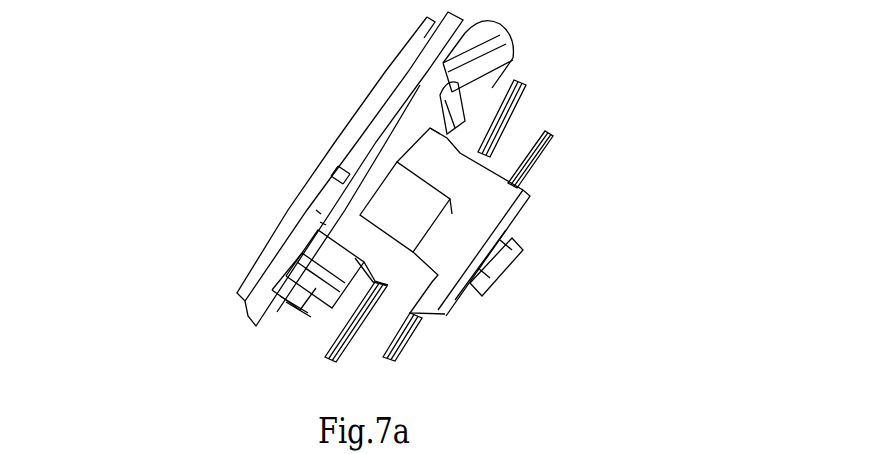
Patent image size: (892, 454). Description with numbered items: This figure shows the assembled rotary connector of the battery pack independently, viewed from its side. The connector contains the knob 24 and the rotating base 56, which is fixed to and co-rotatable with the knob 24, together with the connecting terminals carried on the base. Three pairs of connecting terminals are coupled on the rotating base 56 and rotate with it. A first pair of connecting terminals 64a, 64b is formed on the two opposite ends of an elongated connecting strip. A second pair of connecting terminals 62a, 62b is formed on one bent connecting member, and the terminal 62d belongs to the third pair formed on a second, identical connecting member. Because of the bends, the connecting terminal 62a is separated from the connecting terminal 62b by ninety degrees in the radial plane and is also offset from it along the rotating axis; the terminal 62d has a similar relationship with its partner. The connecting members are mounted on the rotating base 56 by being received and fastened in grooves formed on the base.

The knob 24 is at (300, 186).
The rotating base 56 is at (458, 208).
The connecting terminal 62a is at (443, 95).
The connecting terminal 62b is at (383, 358).
The connecting terminal 62d is at (547, 132).
The connecting terminal 64a is at (332, 355).
The connecting terminal 64b is at (525, 75).